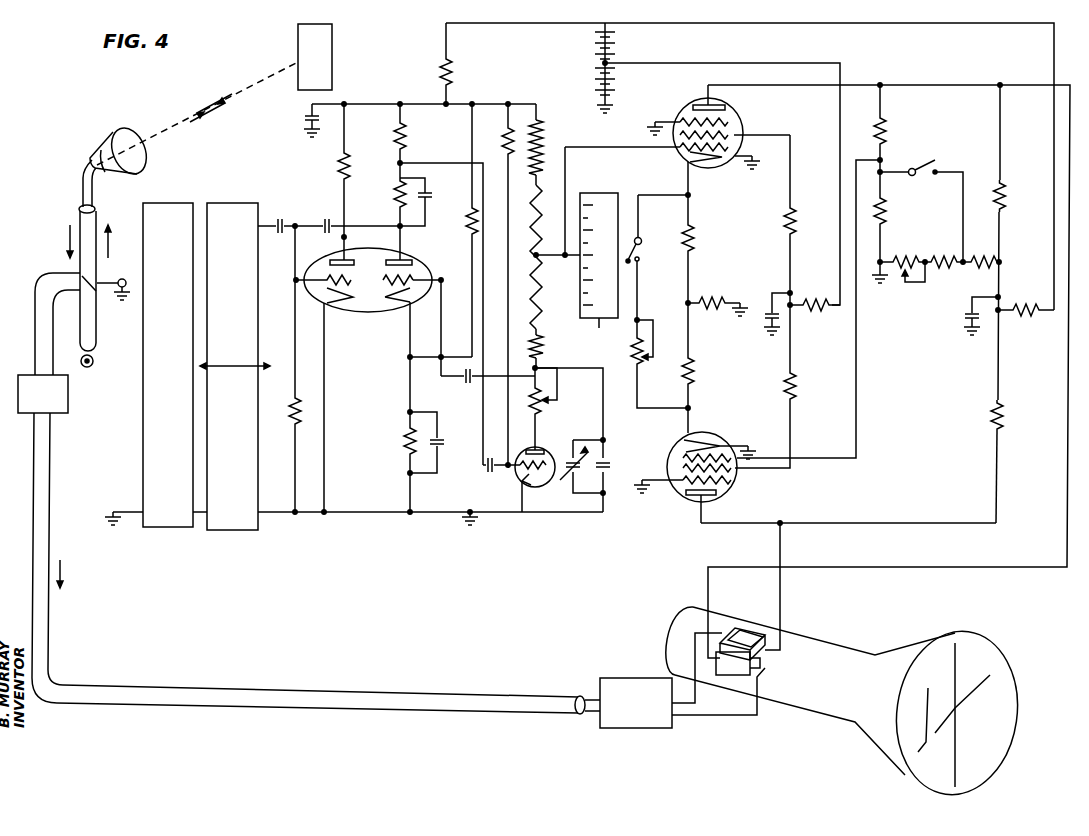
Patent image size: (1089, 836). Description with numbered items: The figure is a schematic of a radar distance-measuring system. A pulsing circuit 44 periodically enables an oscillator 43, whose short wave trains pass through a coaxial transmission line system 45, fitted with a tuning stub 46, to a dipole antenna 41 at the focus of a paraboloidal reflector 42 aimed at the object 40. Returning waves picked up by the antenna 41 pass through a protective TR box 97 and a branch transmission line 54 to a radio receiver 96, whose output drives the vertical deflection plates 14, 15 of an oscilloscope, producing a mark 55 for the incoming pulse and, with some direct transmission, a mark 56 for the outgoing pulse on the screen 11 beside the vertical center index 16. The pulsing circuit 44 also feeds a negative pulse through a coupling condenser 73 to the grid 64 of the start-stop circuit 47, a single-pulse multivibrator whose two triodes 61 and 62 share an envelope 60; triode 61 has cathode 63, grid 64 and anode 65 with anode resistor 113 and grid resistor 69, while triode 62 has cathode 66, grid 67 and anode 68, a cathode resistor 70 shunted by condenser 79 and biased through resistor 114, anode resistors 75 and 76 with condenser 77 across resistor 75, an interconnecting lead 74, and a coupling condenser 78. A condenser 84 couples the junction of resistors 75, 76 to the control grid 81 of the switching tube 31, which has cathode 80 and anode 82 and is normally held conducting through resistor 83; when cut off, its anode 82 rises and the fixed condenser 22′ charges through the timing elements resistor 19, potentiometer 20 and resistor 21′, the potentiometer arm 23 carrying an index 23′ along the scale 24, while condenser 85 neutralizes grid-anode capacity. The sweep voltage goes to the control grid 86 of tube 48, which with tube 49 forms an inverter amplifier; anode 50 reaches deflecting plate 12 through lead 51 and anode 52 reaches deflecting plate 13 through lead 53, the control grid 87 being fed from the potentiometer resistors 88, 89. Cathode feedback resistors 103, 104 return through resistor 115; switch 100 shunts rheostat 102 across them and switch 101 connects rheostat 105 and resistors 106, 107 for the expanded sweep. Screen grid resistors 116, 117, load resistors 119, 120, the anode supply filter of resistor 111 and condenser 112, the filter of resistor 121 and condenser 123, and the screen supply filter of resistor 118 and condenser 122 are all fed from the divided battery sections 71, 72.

The oscilloscope screen 11 is at (1000, 660).
The deflecting plate 12 is at (726, 670).
The deflecting plate 13 is at (766, 638).
The vertical deflection plate 14 is at (736, 634).
The vertical deflection plate 15 is at (756, 666).
The vertical center index 16 is at (957, 650).
The resistor 19 is at (546, 152).
The potentiometer 20 is at (570, 252).
The resistor 21′ is at (540, 347).
The fixed condenser 22′ is at (612, 464).
The potentiometer arm 23 is at (548, 258).
The index 23′ is at (548, 266).
The scale 24 is at (599, 330).
The switching tube 31 is at (537, 469).
The object 40 is at (298, 36).
The dipole antenna 41 is at (96, 162).
The paraboloidal reflector 42 is at (118, 140).
The oscillator 43 is at (170, 527).
The pulsing circuit 44 is at (232, 530).
The transmission line system 45 is at (100, 280).
The tuning stub 46 is at (96, 330).
The start-stop circuit 47 is at (381, 350).
The vacuum tube 48 is at (677, 140).
The vacuum tube 49 is at (757, 343).
The anode 50 is at (730, 108).
The lead 51 is at (1066, 357).
The anode 52 is at (695, 498).
The lead 53 is at (784, 546).
The branch transmission line 54 is at (358, 695).
The mark 55 is at (953, 708).
The mark 56 is at (925, 720).
The envelope 60 is at (432, 300).
The left-hand triode 61 is at (332, 254).
The right-hand triode 62 is at (425, 266).
The cathode 63 is at (344, 300).
The grid 64 is at (330, 300).
The anode 65 is at (348, 256).
The cathode 66 is at (400, 300).
The grid 67 is at (436, 285).
The anode 68 is at (403, 245).
The resistor 69 is at (298, 402).
The cathode resistor 70 is at (406, 440).
The battery section 71 is at (618, 46).
The battery section 72 is at (618, 88).
The coupling condenser 73 is at (283, 222).
The interconnecting lead 74 is at (372, 240).
The resistor 75 is at (398, 194).
The resistor 76 is at (404, 135).
The condenser 77 is at (428, 204).
The condenser 78 is at (330, 222).
The condenser 79 is at (441, 442).
The cathode 80 is at (529, 484).
The control grid 81 is at (548, 458).
The anode 82 is at (537, 450).
The resistor 83 is at (510, 140).
The condenser 84 is at (488, 470).
The condenser 85 is at (467, 382).
The control grid 86 is at (692, 150).
The control grid 87 is at (684, 448).
The resistor 88 is at (886, 129).
The resistor 89 is at (886, 210).
The radio receiver 96 is at (655, 728).
The TR box 97 is at (60, 413).
The switch 100 is at (641, 246).
The switch 101 is at (925, 164).
The rheostat 102 is at (646, 366).
The cathode feedback resistor 103 is at (692, 238).
The cathode feedback resistor 104 is at (692, 372).
The rheostat 105 is at (904, 272).
The resistor 106 is at (950, 270).
The resistor 107 is at (976, 258).
The resistor 111 is at (440, 62).
The condenser 112 is at (305, 120).
The anode resistor 113 is at (346, 166).
The resistor 114 is at (470, 216).
The resistor 115 is at (718, 292).
The resistor 116 is at (796, 220).
The resistor 117 is at (795, 388).
The resistor 118 is at (815, 302).
The load resistor 119 is at (1004, 196).
The load resistor 120 is at (1003, 412).
The resistor 121 is at (1028, 314).
The condenser 122 is at (762, 322).
The condenser 123 is at (968, 316).